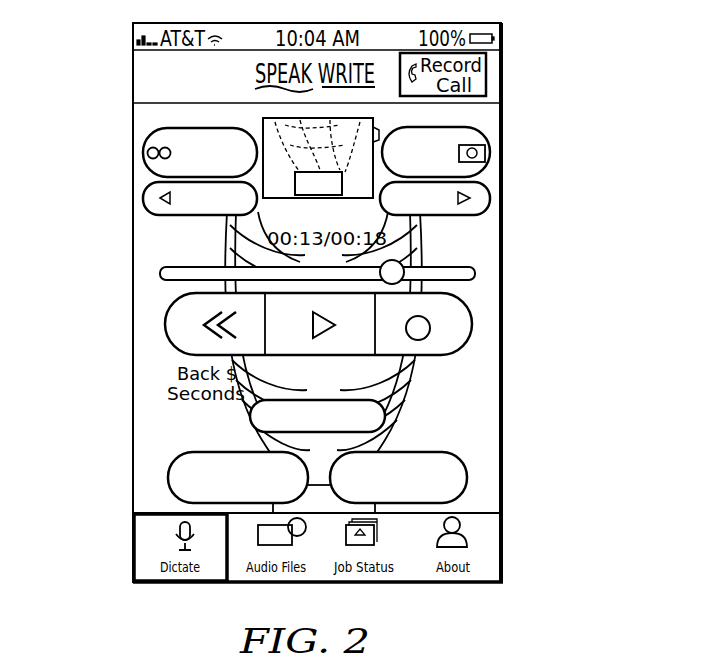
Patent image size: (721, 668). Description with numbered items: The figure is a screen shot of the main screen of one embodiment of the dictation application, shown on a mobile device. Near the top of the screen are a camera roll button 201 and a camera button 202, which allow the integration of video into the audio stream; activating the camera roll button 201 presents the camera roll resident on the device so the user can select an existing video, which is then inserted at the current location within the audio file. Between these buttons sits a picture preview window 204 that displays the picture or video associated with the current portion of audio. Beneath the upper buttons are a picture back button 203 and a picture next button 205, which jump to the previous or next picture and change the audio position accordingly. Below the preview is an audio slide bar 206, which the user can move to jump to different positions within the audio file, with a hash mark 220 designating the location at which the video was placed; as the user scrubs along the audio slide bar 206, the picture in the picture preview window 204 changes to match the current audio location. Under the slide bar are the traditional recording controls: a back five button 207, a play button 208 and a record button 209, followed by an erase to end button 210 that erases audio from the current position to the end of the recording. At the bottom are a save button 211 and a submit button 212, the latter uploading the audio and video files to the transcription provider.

The camera roll button 201 is at (143, 150).
The camera button 202 is at (490, 151).
The picture back button 203 is at (143, 198).
The picture preview window 204 is at (375, 123).
The picture next button 205 is at (490, 196).
The audio slide bar 206 is at (160, 272).
The back 5 button 207 is at (165, 326).
The play button 208 is at (332, 357).
The record button 209 is at (472, 336).
The erase to end button 210 is at (250, 410).
The save button 211 is at (168, 478).
The submit button 212 is at (467, 482).
The hash mark 220 is at (350, 260).